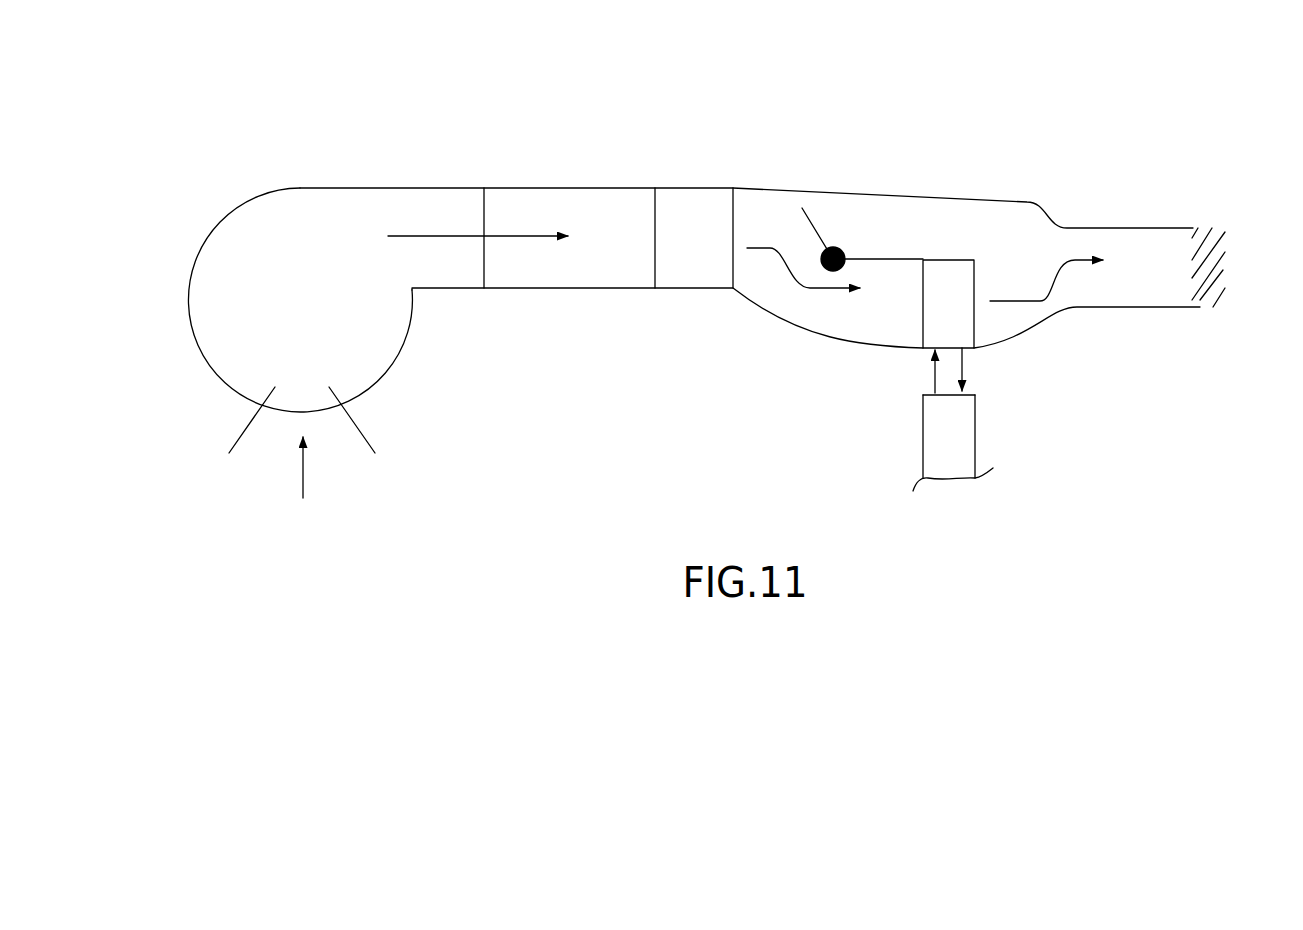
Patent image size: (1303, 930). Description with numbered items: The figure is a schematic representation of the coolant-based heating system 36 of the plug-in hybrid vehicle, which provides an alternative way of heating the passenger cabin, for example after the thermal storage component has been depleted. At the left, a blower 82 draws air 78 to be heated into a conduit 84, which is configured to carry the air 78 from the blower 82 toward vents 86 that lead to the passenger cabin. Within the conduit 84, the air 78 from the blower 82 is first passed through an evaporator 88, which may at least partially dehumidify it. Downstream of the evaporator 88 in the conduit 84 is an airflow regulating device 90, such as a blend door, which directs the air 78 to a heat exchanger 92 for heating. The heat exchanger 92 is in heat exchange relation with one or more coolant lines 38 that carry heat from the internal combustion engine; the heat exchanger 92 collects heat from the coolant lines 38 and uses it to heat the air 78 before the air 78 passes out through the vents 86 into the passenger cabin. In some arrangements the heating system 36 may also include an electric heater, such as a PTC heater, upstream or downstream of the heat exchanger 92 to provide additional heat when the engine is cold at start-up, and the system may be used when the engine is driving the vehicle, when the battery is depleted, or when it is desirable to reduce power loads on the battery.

The coolant-based heating system 36 is at (847, 103).
The coolant line 38 is at (976, 434).
The air 78 is at (301, 462).
The blower 82 is at (222, 218).
The conduit 84 is at (517, 188).
The vents 86 is at (1218, 258).
The evaporator 88 is at (697, 188).
The airflow regulating device 90 is at (827, 242).
The heat exchanger (HEX) 92 is at (974, 285).